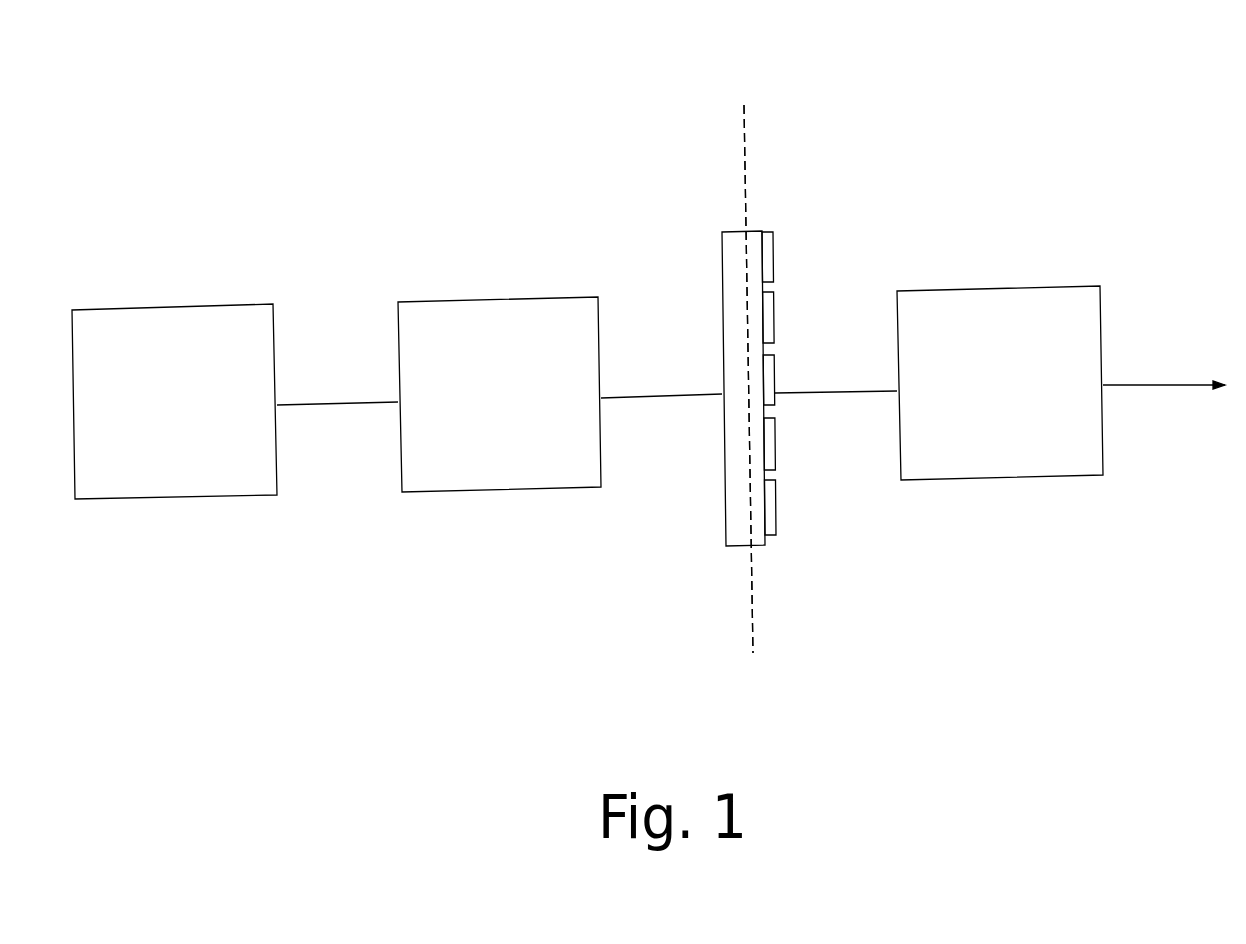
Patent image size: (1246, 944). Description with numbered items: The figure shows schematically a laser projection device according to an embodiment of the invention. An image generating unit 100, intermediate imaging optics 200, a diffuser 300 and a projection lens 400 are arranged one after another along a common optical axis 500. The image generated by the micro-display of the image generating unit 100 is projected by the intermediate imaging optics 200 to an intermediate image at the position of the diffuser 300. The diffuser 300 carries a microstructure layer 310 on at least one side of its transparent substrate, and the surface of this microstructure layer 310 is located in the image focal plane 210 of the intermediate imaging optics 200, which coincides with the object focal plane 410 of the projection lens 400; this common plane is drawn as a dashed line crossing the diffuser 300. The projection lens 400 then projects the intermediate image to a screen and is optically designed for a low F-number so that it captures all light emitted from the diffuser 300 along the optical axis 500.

The image generating unit 100 is at (188, 509).
The intermediate imaging optics 200 is at (503, 502).
The image focal plane 210 is at (759, 353).
The diffuser 300 is at (716, 521).
The microstructure layer 310 is at (775, 533).
The projection lens 400 is at (1065, 490).
The object focal plane 410 is at (748, 379).
The optical axis 500 is at (1152, 385).